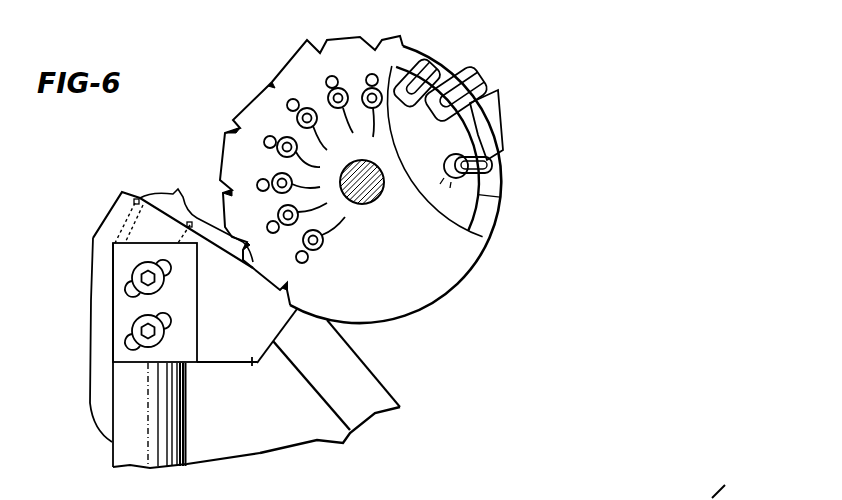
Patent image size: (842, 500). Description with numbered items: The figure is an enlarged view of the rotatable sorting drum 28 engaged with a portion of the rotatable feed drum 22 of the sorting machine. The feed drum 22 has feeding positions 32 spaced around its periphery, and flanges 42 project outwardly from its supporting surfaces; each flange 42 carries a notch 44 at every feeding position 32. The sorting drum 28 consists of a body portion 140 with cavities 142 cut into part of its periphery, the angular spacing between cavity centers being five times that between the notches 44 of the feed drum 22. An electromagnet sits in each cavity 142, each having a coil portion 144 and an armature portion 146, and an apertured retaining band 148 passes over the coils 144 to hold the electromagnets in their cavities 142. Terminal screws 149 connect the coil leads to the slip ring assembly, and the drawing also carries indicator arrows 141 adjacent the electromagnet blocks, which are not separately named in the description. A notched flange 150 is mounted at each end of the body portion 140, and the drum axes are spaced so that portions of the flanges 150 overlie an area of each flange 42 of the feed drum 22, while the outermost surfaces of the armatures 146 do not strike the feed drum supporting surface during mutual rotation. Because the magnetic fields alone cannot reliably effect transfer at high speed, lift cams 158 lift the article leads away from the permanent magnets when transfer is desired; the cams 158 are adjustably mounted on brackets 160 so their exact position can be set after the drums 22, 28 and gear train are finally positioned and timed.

The feed drum 22 is at (100, 213).
The sorting drum 28 is at (492, 266).
The feeding position 32 is at (310, 42).
The flange 42 is at (397, 397).
The notch 44 is at (150, 200).
The body portion 140 is at (500, 195).
The clamping direction arrows 141 is at (441, 155).
The cavity 142 is at (458, 118).
The coil portion 144 is at (457, 178).
The armature portion 146 is at (430, 66).
The apertured retaining band 148 is at (444, 93).
The terminal screw 149 is at (300, 117).
The notched flange 150 is at (221, 158).
The lift cam 158 is at (252, 360).
The bracket 160 is at (113, 402).